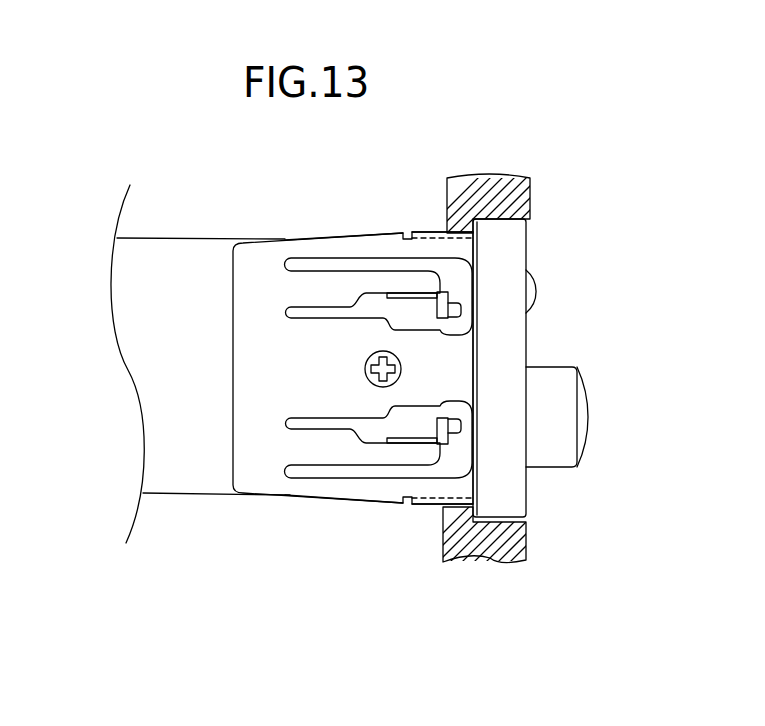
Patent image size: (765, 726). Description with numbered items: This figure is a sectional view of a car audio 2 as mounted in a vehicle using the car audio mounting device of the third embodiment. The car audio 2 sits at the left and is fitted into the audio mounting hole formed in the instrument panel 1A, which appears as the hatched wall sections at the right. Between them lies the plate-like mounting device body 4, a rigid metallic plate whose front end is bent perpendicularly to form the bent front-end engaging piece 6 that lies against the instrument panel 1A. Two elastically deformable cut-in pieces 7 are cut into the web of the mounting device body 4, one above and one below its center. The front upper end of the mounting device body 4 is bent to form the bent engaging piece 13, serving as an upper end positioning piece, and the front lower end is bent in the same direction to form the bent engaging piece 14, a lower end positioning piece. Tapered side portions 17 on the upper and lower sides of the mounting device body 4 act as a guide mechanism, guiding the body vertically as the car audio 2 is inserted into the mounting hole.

The instrument panel 1A is at (512, 195).
The car audio 2 is at (162, 370).
The mounting device body 4 is at (235, 292).
The bent front-end engaging piece 6 is at (477, 340).
The cut-in pieces 7 is at (354, 287).
The bent engaging piece 13 is at (428, 232).
The bent engaging piece 14 is at (422, 503).
The tapered side portion 17 is at (313, 238).